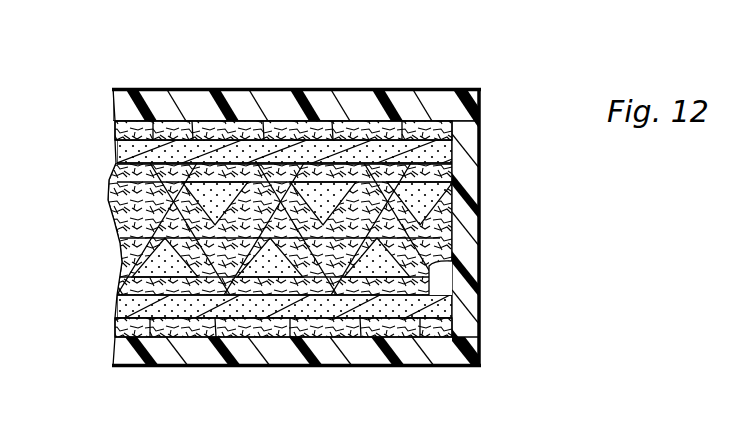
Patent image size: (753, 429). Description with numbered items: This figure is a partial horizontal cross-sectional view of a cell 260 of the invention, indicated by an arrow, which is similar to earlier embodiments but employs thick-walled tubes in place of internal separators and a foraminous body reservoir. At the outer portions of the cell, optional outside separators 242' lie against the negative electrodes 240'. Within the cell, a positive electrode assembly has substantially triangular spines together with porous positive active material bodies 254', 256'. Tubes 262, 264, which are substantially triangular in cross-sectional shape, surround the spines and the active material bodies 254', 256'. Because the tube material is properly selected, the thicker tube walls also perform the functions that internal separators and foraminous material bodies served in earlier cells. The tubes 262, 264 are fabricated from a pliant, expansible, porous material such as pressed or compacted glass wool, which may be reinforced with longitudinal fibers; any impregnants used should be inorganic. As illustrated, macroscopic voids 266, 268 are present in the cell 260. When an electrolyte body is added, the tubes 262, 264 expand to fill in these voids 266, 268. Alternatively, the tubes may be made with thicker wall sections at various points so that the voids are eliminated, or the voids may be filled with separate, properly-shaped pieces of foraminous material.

The cell 260 is at (496, 92).
The outside separator 242' is at (320, 228).
The macroscopic void 266 is at (172, 138).
The porous positive active material body 254' is at (267, 229).
The negative electrode 240' is at (499, 243).
The tube 264 is at (453, 169).
The porous positive active material body 256' is at (514, 227).
The macroscopic void 268 is at (436, 283).
The tube 262 is at (118, 262).